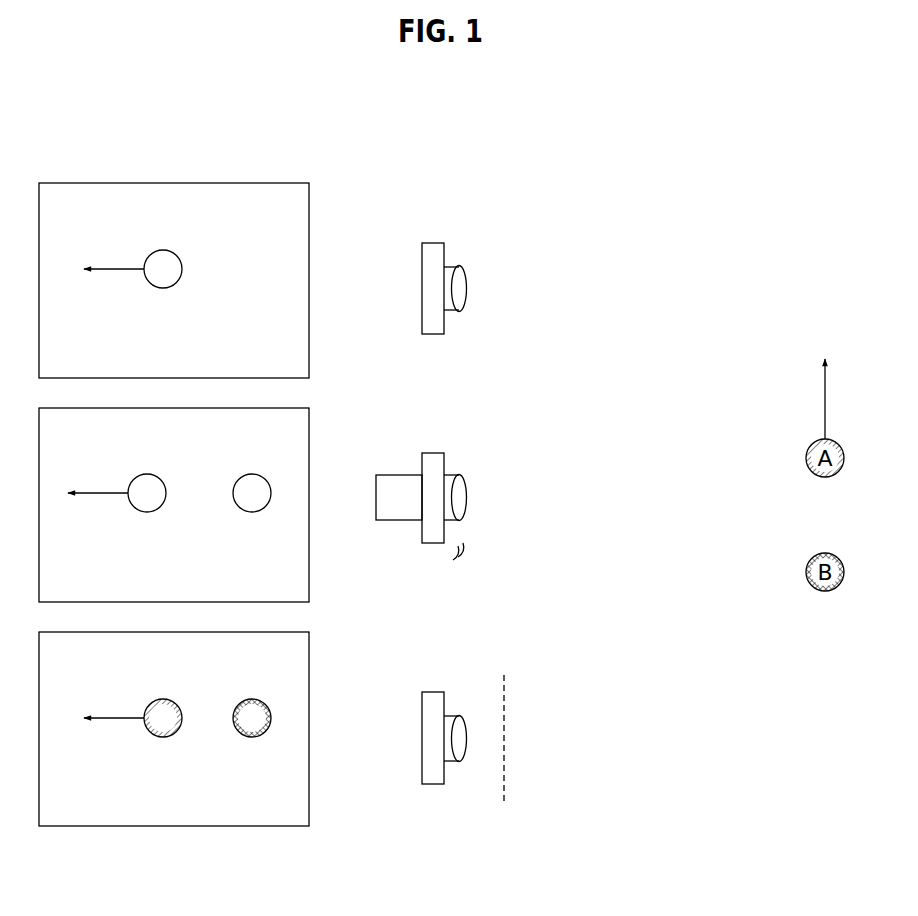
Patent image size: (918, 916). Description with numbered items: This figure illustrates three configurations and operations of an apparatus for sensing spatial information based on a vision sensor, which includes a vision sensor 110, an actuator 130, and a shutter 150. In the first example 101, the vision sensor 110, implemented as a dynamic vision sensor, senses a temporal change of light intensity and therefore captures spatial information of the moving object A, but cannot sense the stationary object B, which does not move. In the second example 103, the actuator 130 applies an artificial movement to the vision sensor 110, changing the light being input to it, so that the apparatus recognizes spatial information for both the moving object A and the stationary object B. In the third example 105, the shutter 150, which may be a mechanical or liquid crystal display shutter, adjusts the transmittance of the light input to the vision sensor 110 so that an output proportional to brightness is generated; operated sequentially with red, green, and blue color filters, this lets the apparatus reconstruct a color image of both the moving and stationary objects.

The configuration example with vision sensor alone 101 is at (174, 183).
The configuration example with vision sensor and actuator 103 is at (309, 408).
The configuration example with vision sensor, shutter and color filter 105 is at (309, 632).
The vision sensor 110 is at (433, 242).
The actuator 130 is at (399, 474).
The shutter 150 is at (522, 665).